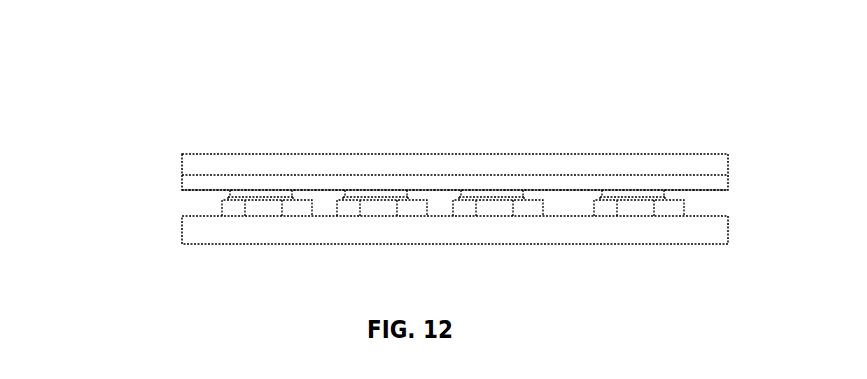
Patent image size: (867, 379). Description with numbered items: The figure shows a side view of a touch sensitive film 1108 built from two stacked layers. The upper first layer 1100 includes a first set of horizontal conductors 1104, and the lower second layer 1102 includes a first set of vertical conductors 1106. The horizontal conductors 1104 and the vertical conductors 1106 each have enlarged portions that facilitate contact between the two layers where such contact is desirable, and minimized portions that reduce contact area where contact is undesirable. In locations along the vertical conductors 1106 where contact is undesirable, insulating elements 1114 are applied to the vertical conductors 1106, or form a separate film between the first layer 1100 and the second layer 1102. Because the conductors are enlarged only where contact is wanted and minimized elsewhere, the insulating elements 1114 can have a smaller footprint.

The touch sensitive film 1108 is at (72, 114).
The first layer 1100 is at (182, 158).
The first set of horizontal conductors 1104 is at (727, 185).
The second layer 1102 is at (182, 236).
The insulating elements 1114 is at (462, 192).
The first set of vertical conductors 1106 is at (632, 214).